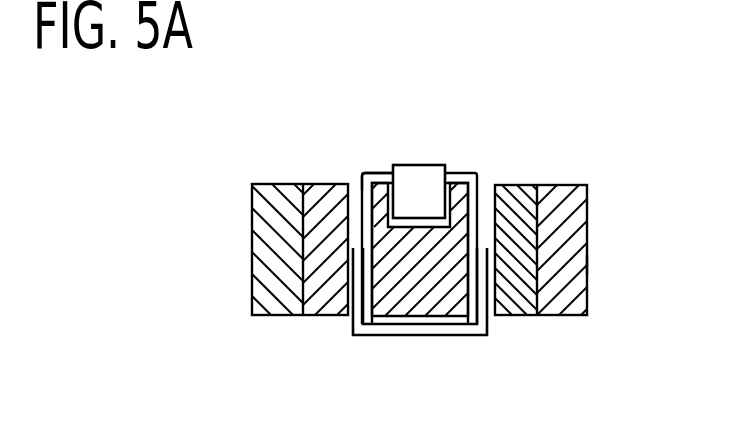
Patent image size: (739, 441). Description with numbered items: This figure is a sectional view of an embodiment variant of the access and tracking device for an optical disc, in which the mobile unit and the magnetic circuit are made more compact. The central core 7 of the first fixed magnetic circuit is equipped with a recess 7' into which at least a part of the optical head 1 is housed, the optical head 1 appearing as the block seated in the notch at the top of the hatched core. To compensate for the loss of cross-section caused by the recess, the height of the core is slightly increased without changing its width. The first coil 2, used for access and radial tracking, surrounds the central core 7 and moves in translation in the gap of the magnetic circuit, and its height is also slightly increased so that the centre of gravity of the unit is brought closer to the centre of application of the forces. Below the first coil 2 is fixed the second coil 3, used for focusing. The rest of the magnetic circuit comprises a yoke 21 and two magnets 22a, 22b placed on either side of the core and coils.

The optical head 1 is at (420, 163).
The first coil 2 is at (461, 173).
The second coil 3 is at (427, 336).
The central core 7 is at (444, 210).
The recess 7' is at (364, 137).
The yoke 21 is at (588, 265).
The magnet 22a is at (507, 316).
The magnet 22b is at (332, 316).